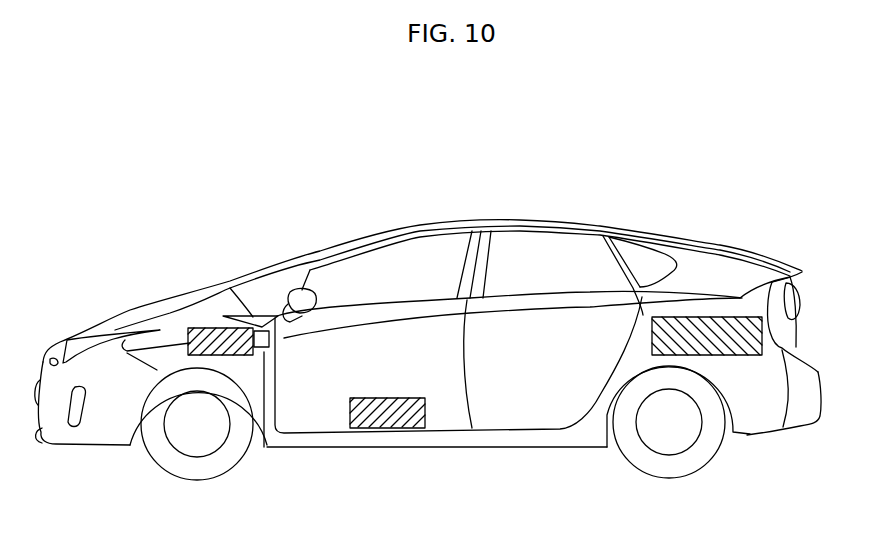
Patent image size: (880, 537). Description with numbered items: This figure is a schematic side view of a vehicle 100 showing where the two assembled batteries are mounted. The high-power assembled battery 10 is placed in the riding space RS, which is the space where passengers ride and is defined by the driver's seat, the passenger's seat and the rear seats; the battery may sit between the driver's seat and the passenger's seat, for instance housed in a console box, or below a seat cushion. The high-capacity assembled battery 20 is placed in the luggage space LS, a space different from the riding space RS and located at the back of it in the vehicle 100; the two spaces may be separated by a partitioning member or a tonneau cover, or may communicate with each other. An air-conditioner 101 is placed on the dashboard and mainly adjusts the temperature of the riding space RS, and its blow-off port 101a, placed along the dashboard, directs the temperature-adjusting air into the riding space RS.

The vehicle 100 is at (324, 233).
The air-conditioner 101 is at (210, 340).
The blow-off port 101a is at (265, 338).
The high-power assembled battery 10 is at (387, 413).
The high-capacity assembled battery 20 is at (713, 334).
The riding space RS is at (407, 283).
The luggage space LS is at (737, 370).